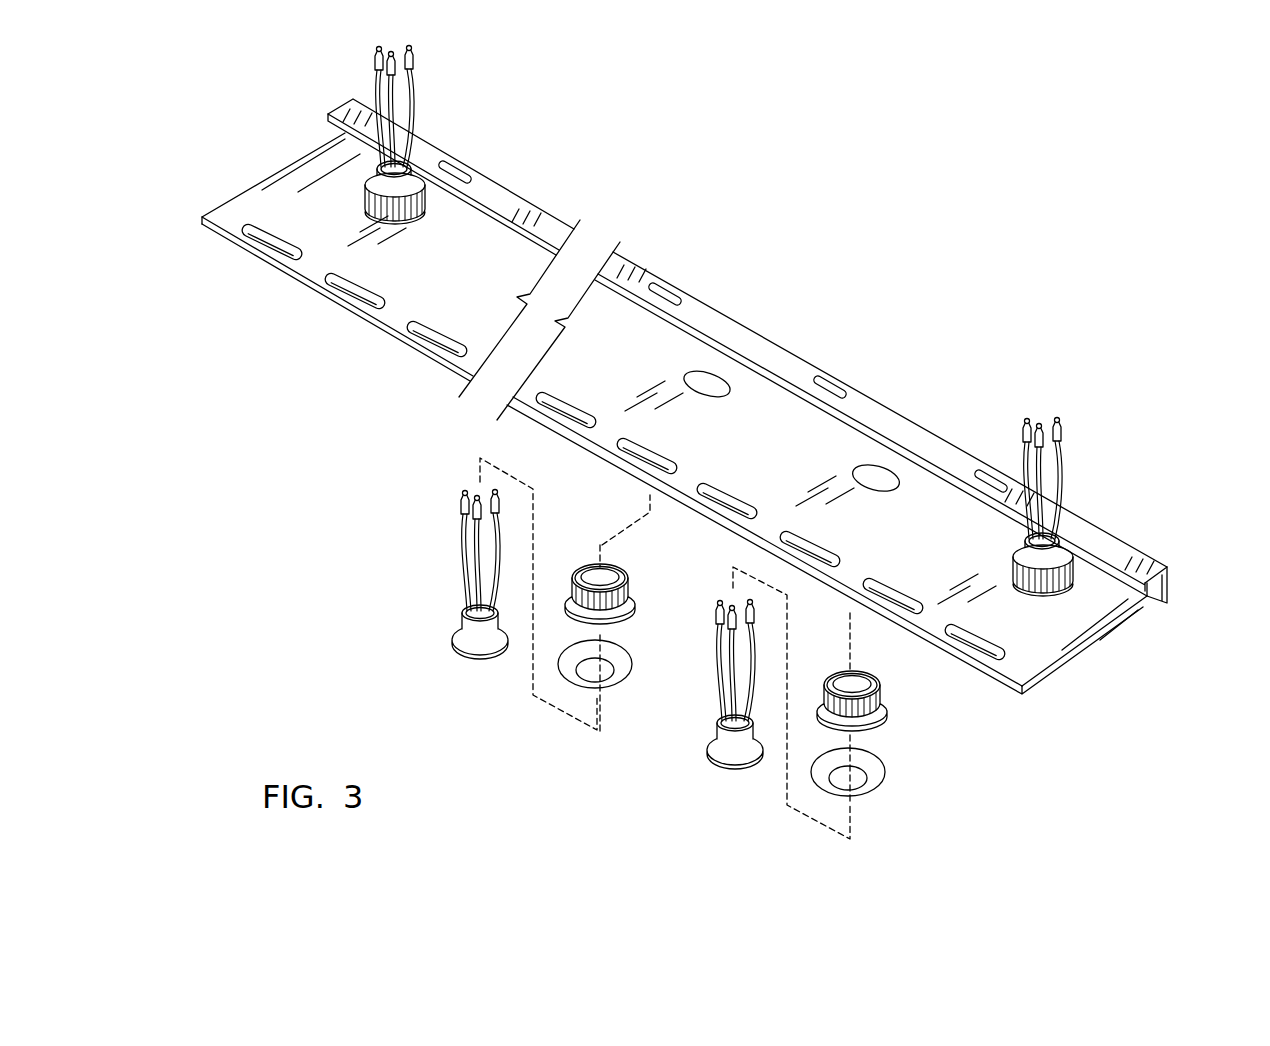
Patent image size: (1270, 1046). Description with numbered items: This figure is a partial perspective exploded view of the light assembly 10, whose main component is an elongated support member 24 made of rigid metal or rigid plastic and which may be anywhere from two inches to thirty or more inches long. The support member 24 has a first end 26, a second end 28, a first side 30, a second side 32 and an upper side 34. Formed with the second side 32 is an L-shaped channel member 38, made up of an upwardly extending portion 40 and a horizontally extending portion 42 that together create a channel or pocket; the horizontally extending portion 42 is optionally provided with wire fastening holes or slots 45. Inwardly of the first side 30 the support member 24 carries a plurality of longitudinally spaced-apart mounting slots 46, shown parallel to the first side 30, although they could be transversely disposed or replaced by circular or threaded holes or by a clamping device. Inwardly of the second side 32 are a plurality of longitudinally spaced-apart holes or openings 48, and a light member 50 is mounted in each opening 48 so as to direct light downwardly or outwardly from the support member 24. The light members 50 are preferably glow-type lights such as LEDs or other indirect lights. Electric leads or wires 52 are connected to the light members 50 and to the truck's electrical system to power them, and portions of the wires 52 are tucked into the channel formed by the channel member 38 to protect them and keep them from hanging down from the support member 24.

The light assembly 10 is at (707, 439).
The elongated support member 24 is at (707, 427).
The first end 26 is at (288, 153).
The second end 28 is at (1098, 658).
The first side 30 is at (438, 358).
The second side 32 is at (1167, 601).
The upper side 34 is at (930, 546).
The L-shaped channel member 38 is at (794, 357).
The upwardly extending portion 40 is at (1147, 597).
The horizontally extending portion 42 is at (1093, 532).
The wire fastening holes or slots 45 is at (665, 286).
The mounting slots 46 is at (738, 512).
The holes or openings 48 is at (868, 470).
The light member 50 is at (421, 170).
The electric leads or wires 52 is at (414, 75).